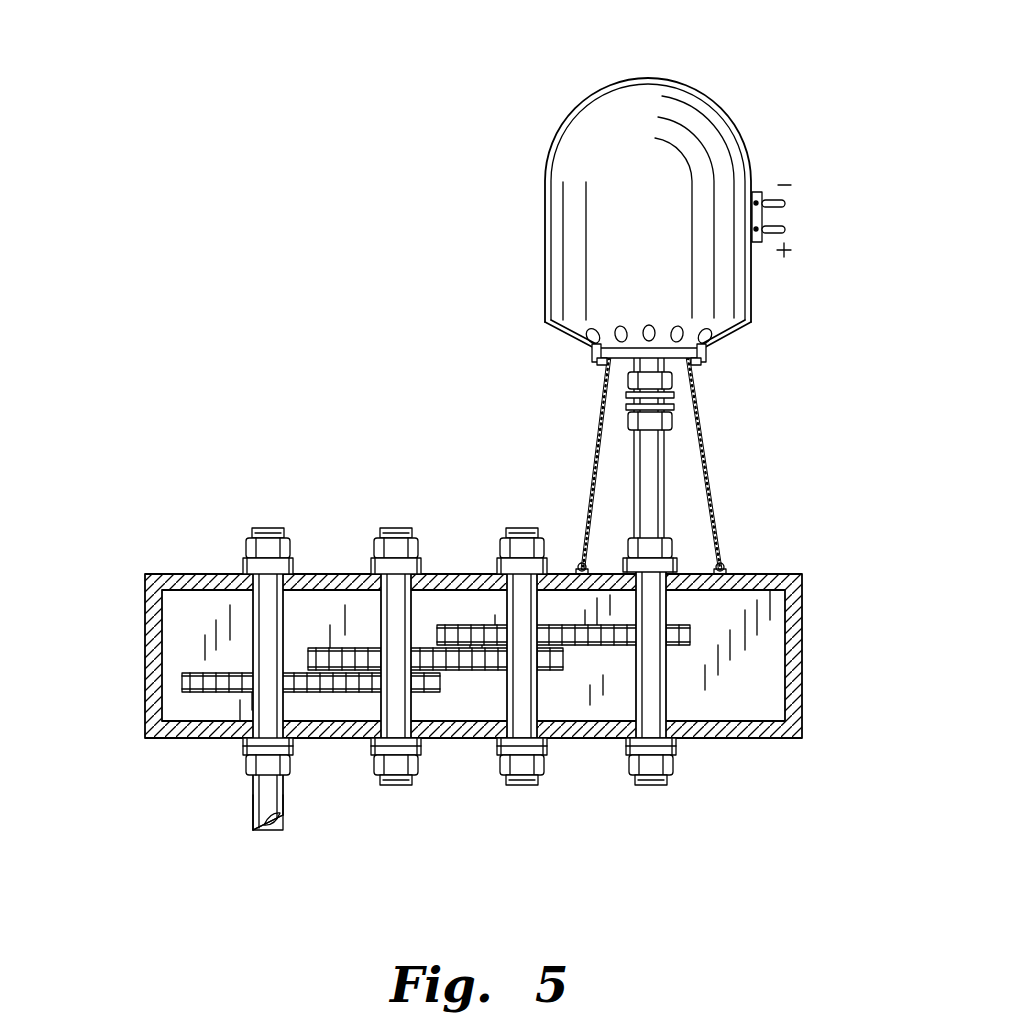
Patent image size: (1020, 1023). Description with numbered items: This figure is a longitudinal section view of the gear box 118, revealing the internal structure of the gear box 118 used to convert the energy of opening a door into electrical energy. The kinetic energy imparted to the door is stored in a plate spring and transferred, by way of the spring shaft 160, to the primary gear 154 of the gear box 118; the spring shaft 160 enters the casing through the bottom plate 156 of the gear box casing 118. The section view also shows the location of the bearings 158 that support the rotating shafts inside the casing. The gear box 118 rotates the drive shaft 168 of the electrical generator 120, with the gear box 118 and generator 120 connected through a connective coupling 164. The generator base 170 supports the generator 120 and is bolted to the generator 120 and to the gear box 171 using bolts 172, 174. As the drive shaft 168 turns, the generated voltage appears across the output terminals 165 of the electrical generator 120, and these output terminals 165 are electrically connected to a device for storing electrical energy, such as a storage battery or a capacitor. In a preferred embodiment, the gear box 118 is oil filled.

The gear box 118 is at (806, 650).
The electrical generator 120 is at (641, 96).
The primary gear 154 is at (184, 742).
The bottom plate 156 is at (327, 742).
The bearings 158 is at (292, 562).
The spring shaft 160 is at (250, 812).
The connective coupling 164 is at (673, 398).
The output terminals 165 is at (799, 216).
The drive shaft 168 is at (666, 468).
The generator base 170 is at (604, 447).
The gear box 171 is at (112, 656).
The bolts 172 is at (722, 565).
The bolts 174 is at (606, 366).